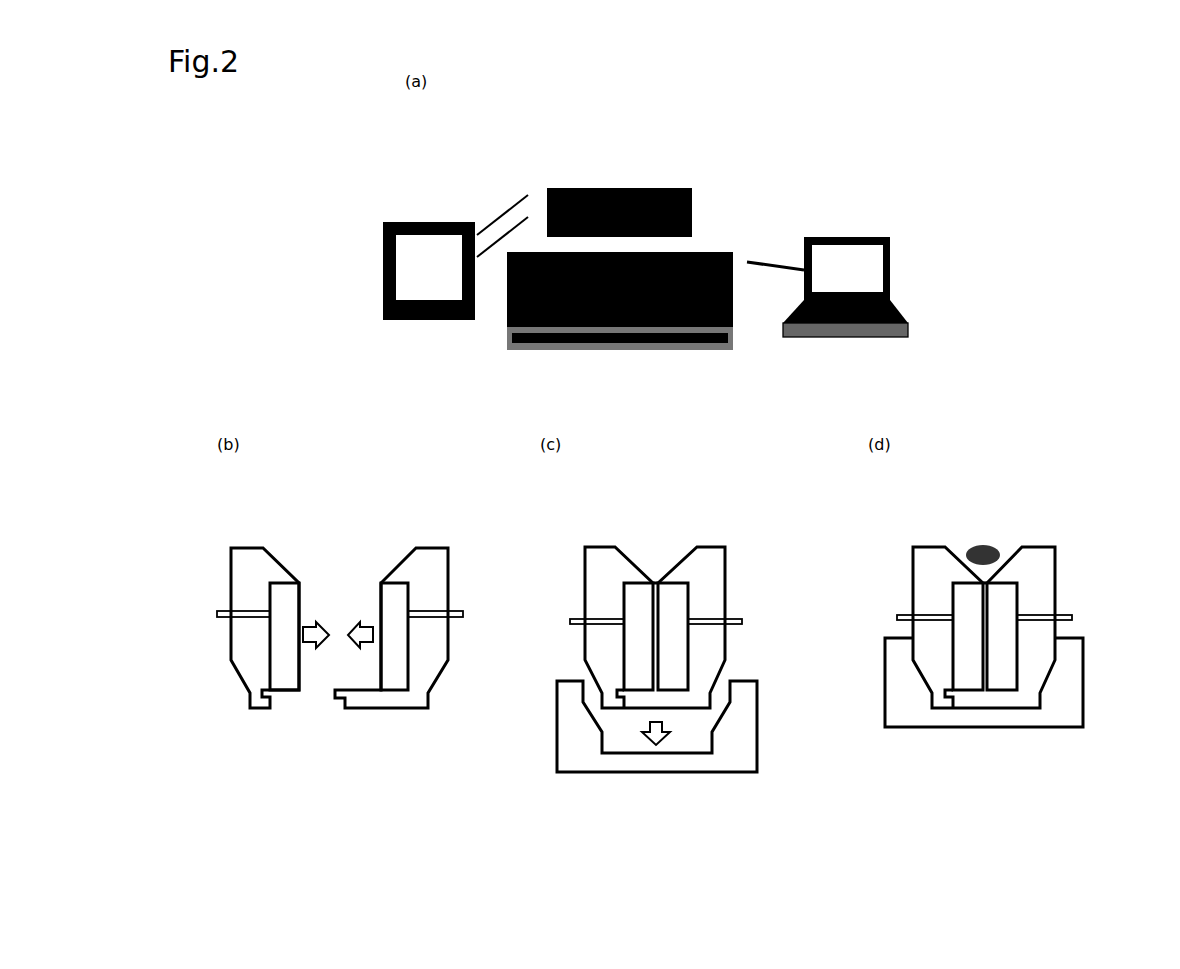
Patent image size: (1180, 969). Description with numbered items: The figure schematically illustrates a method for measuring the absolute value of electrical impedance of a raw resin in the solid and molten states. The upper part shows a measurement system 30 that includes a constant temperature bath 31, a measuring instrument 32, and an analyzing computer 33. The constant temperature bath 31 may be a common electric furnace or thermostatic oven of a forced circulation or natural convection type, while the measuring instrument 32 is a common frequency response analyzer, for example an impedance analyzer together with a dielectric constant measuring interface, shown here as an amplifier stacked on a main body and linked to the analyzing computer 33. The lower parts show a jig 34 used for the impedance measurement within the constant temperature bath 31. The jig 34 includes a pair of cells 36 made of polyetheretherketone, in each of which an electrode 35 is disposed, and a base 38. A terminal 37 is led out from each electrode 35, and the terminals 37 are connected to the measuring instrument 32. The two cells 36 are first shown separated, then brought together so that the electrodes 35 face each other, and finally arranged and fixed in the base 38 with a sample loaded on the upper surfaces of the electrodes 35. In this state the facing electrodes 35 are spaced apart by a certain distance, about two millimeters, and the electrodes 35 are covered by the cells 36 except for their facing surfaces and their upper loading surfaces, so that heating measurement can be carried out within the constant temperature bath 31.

The measurement system 30 is at (800, 177).
The constant temperature bath 31 is at (382, 257).
The measuring instrument 32 is at (733, 160).
The analyzing computer 33 is at (890, 270).
The jig 34 is at (1088, 560).
The electrode 35 is at (287, 618).
The cell 36 is at (250, 545).
The terminal 37 is at (225, 618).
The base 38 is at (757, 718).